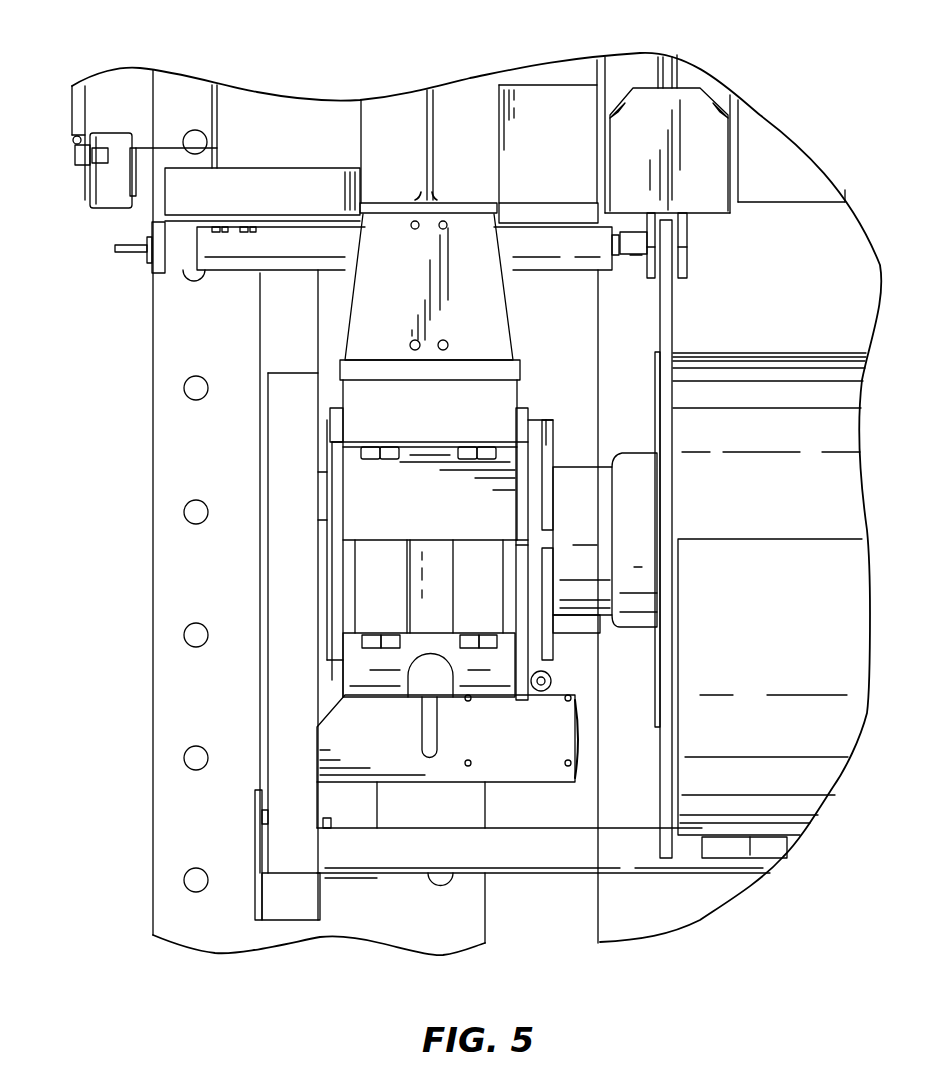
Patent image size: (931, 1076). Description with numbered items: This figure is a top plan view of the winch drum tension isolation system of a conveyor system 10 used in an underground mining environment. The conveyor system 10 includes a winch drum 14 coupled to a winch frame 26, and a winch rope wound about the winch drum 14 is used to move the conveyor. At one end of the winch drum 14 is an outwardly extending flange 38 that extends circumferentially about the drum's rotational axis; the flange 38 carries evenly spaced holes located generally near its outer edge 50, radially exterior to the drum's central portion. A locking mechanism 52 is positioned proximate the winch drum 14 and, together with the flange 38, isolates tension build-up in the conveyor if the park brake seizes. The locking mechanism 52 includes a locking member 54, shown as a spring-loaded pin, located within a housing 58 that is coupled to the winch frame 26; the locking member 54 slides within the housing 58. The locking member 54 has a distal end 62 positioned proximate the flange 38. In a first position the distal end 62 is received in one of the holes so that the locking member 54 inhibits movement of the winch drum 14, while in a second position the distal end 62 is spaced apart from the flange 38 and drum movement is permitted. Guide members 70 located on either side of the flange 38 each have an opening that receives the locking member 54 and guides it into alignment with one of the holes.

The conveyor system 10 is at (83, 403).
The winch drum 14 is at (666, 503).
The winch frame 26 is at (182, 196).
The flange 38 is at (670, 428).
The outer edge 50 is at (670, 677).
The locking mechanism 52 is at (335, 243).
The locking member 54 is at (623, 245).
The housing 58 is at (264, 243).
The distal end 62 is at (633, 247).
The guide members 70 is at (651, 223).